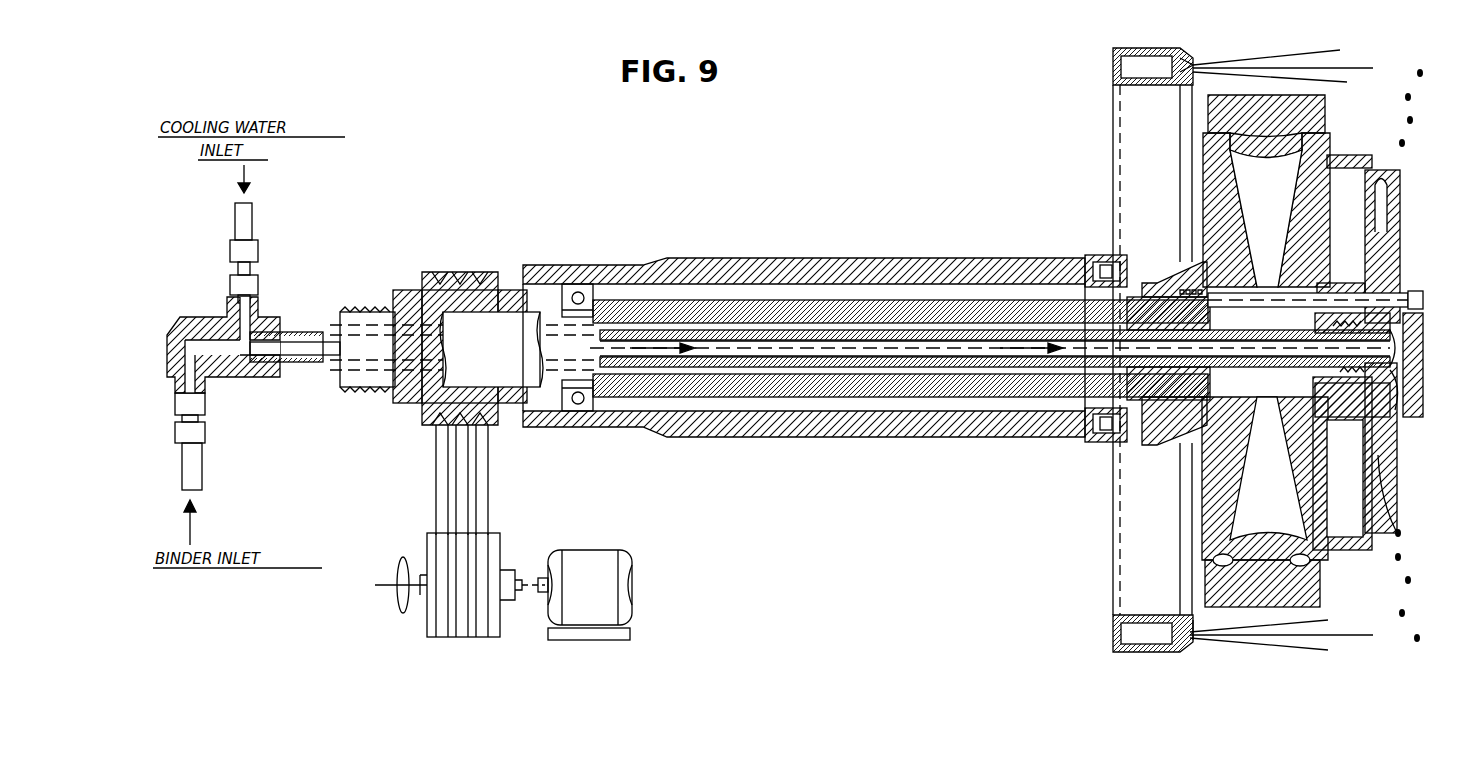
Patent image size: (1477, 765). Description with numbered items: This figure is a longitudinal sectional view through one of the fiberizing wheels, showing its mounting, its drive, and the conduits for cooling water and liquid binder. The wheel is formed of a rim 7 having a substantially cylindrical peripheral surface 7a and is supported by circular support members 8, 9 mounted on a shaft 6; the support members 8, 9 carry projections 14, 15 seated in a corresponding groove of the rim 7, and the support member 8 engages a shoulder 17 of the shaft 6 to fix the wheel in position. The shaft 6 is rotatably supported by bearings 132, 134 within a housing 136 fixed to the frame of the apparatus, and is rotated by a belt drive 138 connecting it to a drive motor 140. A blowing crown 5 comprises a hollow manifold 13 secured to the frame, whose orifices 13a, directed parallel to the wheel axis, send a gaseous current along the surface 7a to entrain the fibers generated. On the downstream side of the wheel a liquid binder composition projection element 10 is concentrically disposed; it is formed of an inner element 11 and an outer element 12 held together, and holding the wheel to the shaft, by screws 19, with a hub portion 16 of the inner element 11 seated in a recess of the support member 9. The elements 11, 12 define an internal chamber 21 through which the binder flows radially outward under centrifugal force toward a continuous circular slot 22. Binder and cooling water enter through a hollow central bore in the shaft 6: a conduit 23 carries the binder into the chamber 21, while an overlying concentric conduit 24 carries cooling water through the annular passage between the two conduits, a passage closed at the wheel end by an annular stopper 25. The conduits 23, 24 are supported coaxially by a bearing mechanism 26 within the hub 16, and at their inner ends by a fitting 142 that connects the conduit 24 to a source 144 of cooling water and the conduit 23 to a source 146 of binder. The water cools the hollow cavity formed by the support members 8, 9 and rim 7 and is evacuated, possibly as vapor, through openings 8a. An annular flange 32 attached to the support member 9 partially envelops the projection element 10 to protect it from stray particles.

The blowing crown 5 is at (1113, 70).
The shaft 6 is at (1150, 283).
The rim 7 is at (1318, 112).
The peripheral surface 7a is at (1252, 95).
The support member 8 is at (1210, 175).
The openings 8a is at (1205, 528).
The support member 9 is at (1310, 192).
The projection element 10 is at (1400, 230).
The inner element 11 is at (1346, 422).
The outer element 12 is at (1395, 440).
The hollow manifold 13 is at (1150, 48).
The orifices 13a is at (1193, 60).
The projection 14 is at (1222, 566).
The projection 15 is at (1308, 564).
The hub portion 16 is at (1345, 288).
The shoulder 17 is at (1197, 438).
The screws 19 is at (1410, 292).
The internal chamber 21 is at (1385, 465).
The circular slot 22 is at (1385, 198).
The conduit 23 is at (315, 348).
The concentric conduit 24 is at (333, 352).
The annular stopper 25 is at (1395, 362).
The bearing mechanism 26 is at (1400, 410).
The flange 32 is at (1345, 158).
The bearing 132 is at (576, 282).
The bearing 134 is at (1092, 270).
The housing 136 is at (800, 260).
The belt drive 138 is at (492, 480).
The drive motor 140 is at (625, 556).
The fitting 142 is at (245, 378).
The source of cooling water 144 is at (250, 242).
The source of liquid binder composition 146 is at (203, 464).